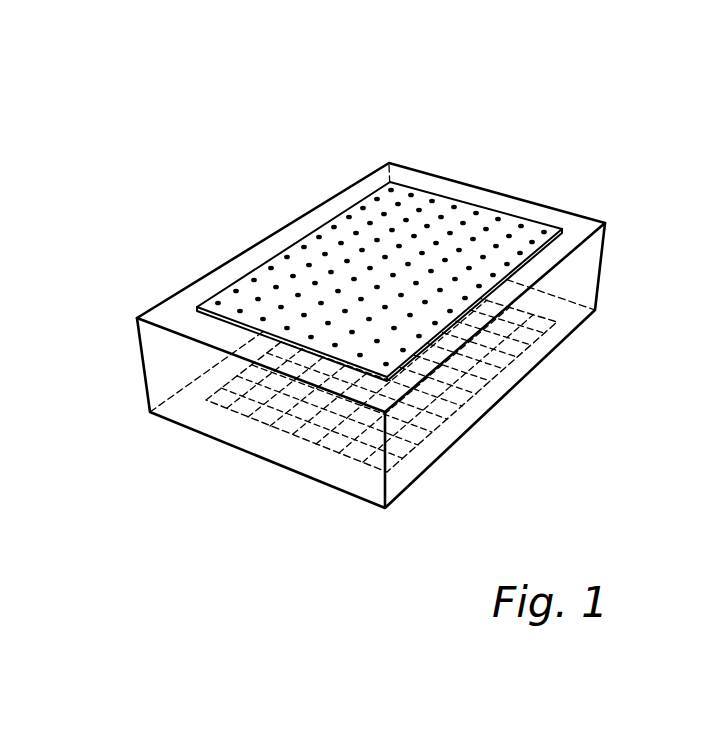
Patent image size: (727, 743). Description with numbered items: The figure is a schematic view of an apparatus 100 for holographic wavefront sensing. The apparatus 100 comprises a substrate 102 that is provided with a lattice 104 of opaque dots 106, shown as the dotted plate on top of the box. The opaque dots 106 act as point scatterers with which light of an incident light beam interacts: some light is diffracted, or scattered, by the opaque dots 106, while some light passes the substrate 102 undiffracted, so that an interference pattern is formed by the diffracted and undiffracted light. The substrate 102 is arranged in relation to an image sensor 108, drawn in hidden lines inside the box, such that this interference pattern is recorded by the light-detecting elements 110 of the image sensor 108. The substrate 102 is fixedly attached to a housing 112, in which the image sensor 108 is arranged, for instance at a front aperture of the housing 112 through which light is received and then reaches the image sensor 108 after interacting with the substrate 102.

The apparatus 100 is at (542, 89).
The substrate 102 is at (455, 205).
The lattice 104 is at (513, 215).
The opaque dots 106 is at (442, 293).
The image sensor 108 is at (414, 448).
The light-detecting elements 110 is at (360, 452).
The housing 112 is at (141, 360).